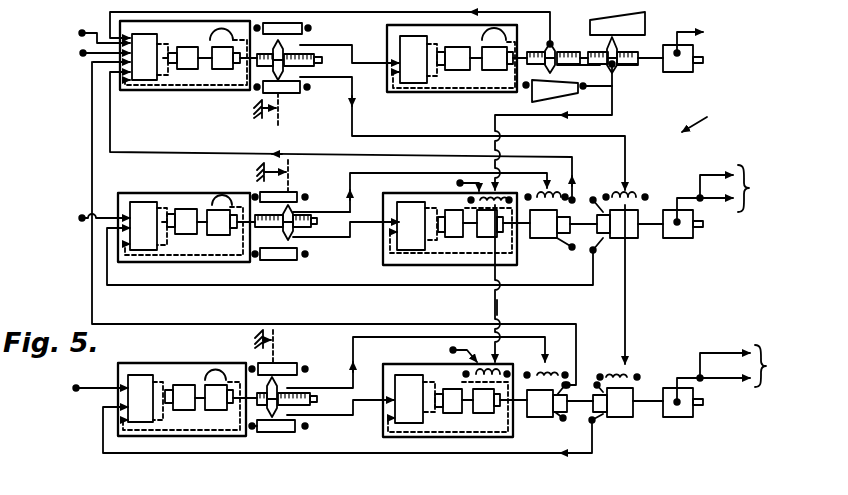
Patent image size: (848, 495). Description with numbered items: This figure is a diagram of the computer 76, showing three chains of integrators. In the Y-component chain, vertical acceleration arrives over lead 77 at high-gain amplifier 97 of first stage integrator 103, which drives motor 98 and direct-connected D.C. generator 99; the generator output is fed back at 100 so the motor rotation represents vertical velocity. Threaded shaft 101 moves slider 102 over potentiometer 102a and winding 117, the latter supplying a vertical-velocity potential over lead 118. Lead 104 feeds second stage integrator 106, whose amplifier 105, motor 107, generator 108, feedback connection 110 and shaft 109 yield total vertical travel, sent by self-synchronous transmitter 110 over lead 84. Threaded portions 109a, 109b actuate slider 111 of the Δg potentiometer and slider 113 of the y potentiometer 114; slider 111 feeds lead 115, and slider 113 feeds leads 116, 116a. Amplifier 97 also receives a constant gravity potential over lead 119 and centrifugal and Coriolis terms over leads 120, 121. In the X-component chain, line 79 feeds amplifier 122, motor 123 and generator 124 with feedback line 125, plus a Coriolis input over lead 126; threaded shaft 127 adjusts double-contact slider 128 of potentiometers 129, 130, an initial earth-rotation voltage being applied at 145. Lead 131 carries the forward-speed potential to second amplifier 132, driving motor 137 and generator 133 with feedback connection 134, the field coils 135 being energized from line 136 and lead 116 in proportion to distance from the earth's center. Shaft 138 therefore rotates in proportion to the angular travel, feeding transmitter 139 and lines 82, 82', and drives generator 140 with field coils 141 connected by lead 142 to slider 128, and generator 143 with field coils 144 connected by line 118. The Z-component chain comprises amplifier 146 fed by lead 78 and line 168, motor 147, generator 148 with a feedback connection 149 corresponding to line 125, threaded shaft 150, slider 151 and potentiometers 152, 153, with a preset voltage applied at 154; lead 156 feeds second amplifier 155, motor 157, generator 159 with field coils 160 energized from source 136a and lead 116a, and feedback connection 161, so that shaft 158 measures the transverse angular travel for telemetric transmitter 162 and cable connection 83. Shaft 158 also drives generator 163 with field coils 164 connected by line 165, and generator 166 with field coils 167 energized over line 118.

The control system 76 is at (708, 120).
The lead 77 is at (90, 60).
The lead 78 is at (80, 395).
The line 79 is at (105, 214).
The line 82 is at (724, 197).
The output 82' is at (705, 186).
The cable connection 83 is at (716, 385).
The lead 84 is at (688, 31).
The high-gain amplifier 97 is at (146, 81).
The motor 98 is at (187, 65).
The D.C. generator 99 is at (233, 57).
The feedback connection 100 is at (165, 91).
The threaded shaft 101 is at (314, 72).
The potentiometer slider 102 is at (308, 45).
The potentiometer 102a is at (282, 22).
The first stage integrator 103 is at (228, 93).
The lead 104 is at (386, 59).
The amplifier 105 is at (404, 85).
The second stage integrator 106 is at (468, 90).
The motor 107 is at (456, 40).
The generator 108 is at (500, 70).
The shaft 109 is at (581, 52).
The threaded portion 109a is at (570, 66).
The threaded portion 109b is at (620, 68).
The self-synchronous transmitter 110 is at (432, 93).
The slider 111 is at (548, 43).
The slider 113 is at (616, 75).
The y potentiometer 114 is at (645, 24).
The lead 115 is at (108, 14).
The lead 116 is at (583, 117).
The lead 116a is at (498, 307).
The winding 117 is at (285, 94).
The lead 118 is at (351, 120).
The lead 119 is at (80, 35).
The lead 120 is at (175, 147).
The lead 121 is at (90, 150).
The amplifier 122 is at (152, 203).
The motor 123 is at (190, 210).
The generator 124 is at (230, 209).
The line 125 is at (178, 258).
The lead 126 is at (350, 286).
The threaded shaft 127 is at (305, 212).
The double-contact slider 128 is at (284, 226).
The potentiometer 129 is at (293, 192).
The potentiometer 130 is at (265, 261).
The lead 131 is at (364, 222).
The second amplifier 132 is at (392, 232).
The generator 133 is at (482, 238).
The feedback connection 134 is at (448, 266).
The field coils 135 is at (501, 196).
The line 136 is at (473, 180).
The source 136a is at (467, 348).
The motor 137 is at (452, 210).
The shaft 138 is at (533, 239).
The transmitter 139 is at (678, 238).
The generator 140 is at (552, 242).
The field coils 141 is at (552, 189).
The lead 142 is at (355, 173).
The generator 143 is at (608, 247).
The field coils 144 is at (642, 192).
The initial voltage means 145 is at (274, 176).
The amplifier 146 is at (135, 378).
The motor 147 is at (185, 386).
The generator 148 is at (225, 410).
The servo unit 149 is at (168, 437).
The threaded shaft 150 is at (317, 400).
The potentiometer slider 151 is at (283, 433).
The potentiometer 152 is at (262, 433).
The potentiometer 153 is at (288, 366).
The initial voltage means 154 is at (246, 344).
The second amplifier 155 is at (410, 423).
The lead 156 is at (322, 417).
The motor 157 is at (454, 413).
The shaft 158 is at (643, 408).
The generator 159 is at (487, 413).
The field coils 160 is at (498, 367).
The feedback connection 161 is at (450, 438).
The telemetric transmitter 162 is at (682, 418).
The generator 163 is at (540, 417).
The field coils 164 is at (560, 374).
The line 165 is at (546, 328).
The generator 166 is at (615, 418).
The field coils 167 is at (632, 374).
The line 168 is at (316, 455).